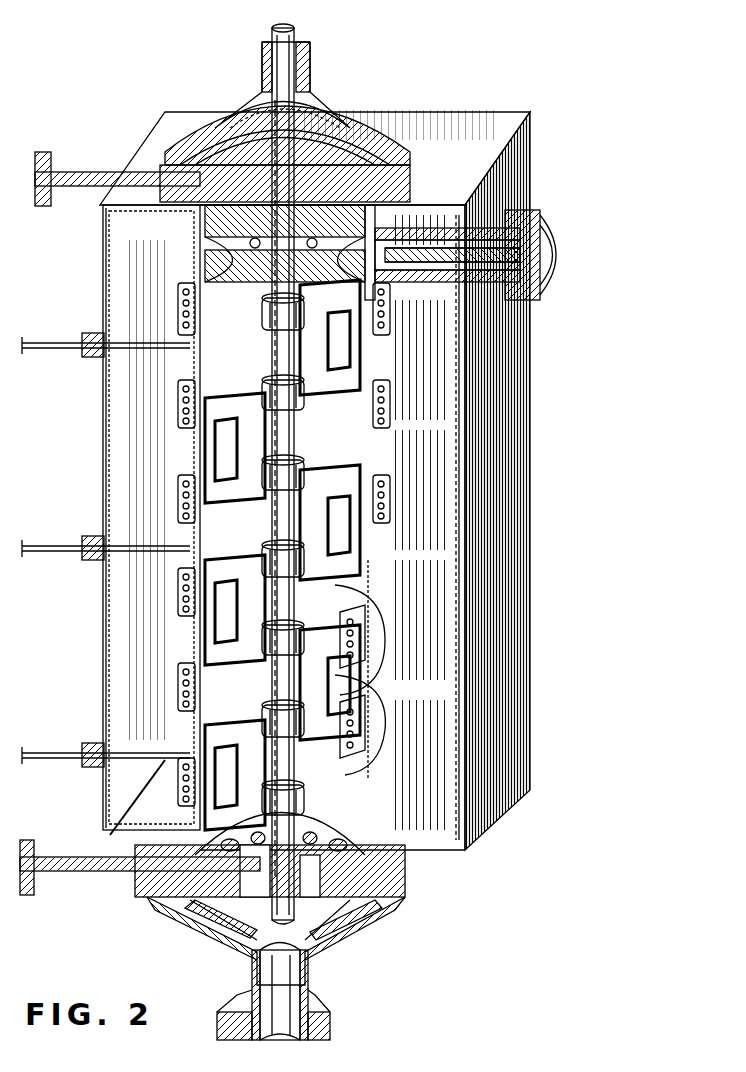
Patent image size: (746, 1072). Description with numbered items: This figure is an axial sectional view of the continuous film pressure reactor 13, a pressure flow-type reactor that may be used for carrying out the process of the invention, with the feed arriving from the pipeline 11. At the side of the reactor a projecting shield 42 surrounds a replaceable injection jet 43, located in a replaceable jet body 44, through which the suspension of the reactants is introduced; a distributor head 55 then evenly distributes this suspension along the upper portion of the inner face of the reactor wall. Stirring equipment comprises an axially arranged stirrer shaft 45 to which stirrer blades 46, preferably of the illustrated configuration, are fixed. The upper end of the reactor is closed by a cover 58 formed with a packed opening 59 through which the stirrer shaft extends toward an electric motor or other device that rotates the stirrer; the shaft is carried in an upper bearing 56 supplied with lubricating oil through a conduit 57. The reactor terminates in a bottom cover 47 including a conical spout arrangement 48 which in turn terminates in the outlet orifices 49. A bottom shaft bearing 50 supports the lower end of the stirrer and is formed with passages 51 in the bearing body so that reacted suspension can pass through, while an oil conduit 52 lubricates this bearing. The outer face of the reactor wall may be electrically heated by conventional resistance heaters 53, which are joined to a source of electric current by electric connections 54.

The pipeline 11 is at (728, 257).
The continuous film pressure reactor 13 is at (420, 198).
The projecting shield 42 is at (520, 195).
The replaceable injection jet 43 is at (548, 283).
The replaceable jet body 44 is at (500, 285).
The stirrer shaft 45 is at (290, 355).
The stirrer blades 46 is at (350, 560).
The bottom cover 47 is at (393, 895).
The conical spout arrangement 48 is at (315, 932).
The outlet orifices 49 is at (280, 1003).
The bottom shaft bearing 50 is at (235, 930).
The passages 51 is at (190, 905).
The oil conduit 52 is at (110, 882).
The resistance heaters 53 is at (180, 690).
The electric connections 54 is at (60, 350).
The distributor head 55 is at (215, 238).
The upper bearing 56 is at (100, 186).
The conduit 57 is at (50, 200).
The cover 58 is at (252, 105).
The packed opening 59 is at (264, 52).